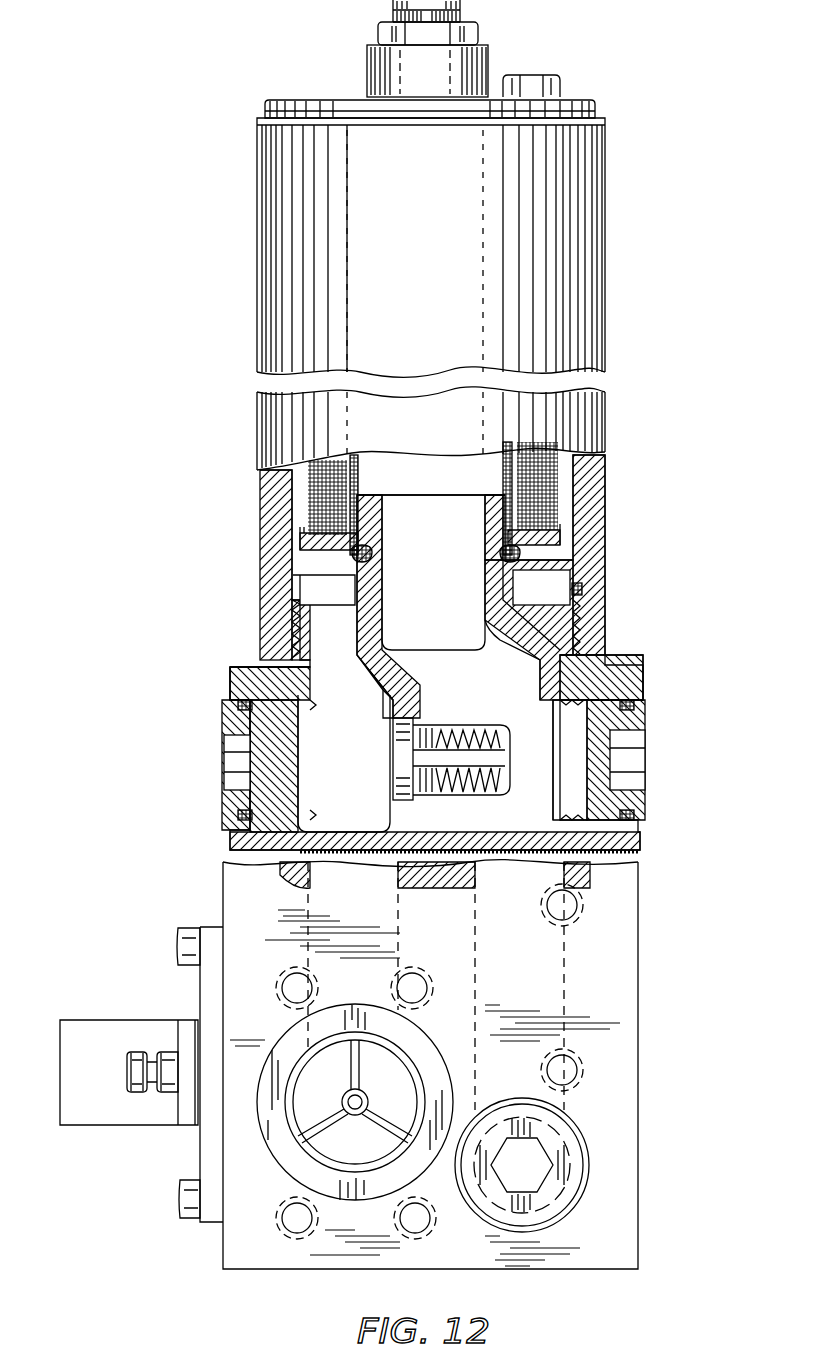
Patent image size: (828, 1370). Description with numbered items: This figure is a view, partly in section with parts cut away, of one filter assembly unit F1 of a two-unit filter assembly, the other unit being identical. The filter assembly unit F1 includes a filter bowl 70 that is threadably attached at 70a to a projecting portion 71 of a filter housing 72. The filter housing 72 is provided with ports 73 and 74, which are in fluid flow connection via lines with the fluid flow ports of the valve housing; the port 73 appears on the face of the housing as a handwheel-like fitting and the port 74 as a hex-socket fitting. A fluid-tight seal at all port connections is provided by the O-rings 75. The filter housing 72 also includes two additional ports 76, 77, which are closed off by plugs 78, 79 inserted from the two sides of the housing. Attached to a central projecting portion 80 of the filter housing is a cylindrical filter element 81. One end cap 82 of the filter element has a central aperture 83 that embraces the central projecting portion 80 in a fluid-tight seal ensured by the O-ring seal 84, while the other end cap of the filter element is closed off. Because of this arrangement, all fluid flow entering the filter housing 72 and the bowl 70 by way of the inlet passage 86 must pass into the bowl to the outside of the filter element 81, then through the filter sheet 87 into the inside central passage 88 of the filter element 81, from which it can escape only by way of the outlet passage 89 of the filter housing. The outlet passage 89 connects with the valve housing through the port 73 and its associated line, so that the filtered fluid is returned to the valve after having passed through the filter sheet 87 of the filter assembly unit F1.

The filter bowl 70 is at (605, 487).
The threaded attachment 70a is at (580, 625).
The projecting portion 71 is at (553, 655).
The filter housing 72 is at (620, 665).
The port 73 is at (285, 1170).
The port 74 is at (580, 1196).
The O-ring 75 is at (578, 590).
The additional port 76 is at (580, 712).
The additional port 77 is at (300, 710).
The plug 78 is at (642, 800).
The plug 79 is at (235, 805).
The central projecting portion 80 is at (375, 580).
The cylindrical filter element 81 is at (358, 475).
The end cap 82 is at (300, 560).
The central aperture 83 is at (362, 560).
The O-ring seal 84 is at (515, 555).
The inlet passage 86 is at (360, 800).
The filter sheet 87 is at (310, 500).
The central passage 88 is at (480, 483).
The outlet passage 89 is at (545, 975).
The filter assembly unit F1 is at (623, 257).